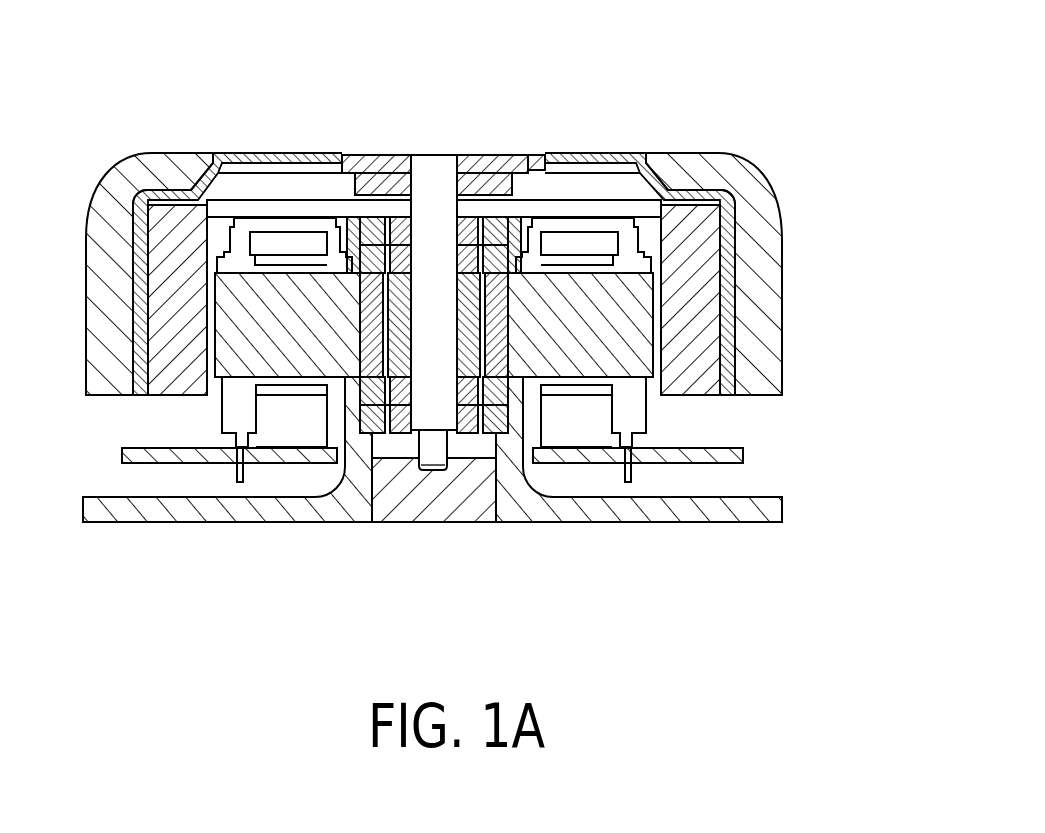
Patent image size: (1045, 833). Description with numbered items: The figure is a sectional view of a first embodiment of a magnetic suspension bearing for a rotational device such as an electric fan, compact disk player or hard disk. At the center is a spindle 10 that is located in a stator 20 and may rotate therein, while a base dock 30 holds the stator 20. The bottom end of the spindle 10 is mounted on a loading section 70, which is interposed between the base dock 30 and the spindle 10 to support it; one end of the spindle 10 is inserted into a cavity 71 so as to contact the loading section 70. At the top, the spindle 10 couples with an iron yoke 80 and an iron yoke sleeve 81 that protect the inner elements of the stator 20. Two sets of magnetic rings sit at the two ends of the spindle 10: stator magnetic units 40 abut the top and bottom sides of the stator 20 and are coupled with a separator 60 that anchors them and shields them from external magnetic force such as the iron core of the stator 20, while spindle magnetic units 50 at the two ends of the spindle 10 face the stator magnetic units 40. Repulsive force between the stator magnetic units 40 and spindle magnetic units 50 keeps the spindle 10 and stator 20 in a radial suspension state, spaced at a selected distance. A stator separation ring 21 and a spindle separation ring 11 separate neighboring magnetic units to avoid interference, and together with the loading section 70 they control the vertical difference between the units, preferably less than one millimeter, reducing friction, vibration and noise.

The spindle 10 is at (430, 168).
The spindle separation ring 11 is at (468, 333).
The stator 20 is at (223, 352).
The stator separation ring 21 is at (368, 345).
The base dock 30 is at (772, 477).
The stator magnetic units 40 is at (370, 437).
The spindle magnetic units 50 is at (393, 437).
The separator 60 is at (345, 228).
The loading section 70 is at (480, 507).
The cavity 71 is at (420, 470).
The iron yoke 80 is at (484, 172).
The iron yoke sleeve 81 is at (703, 160).